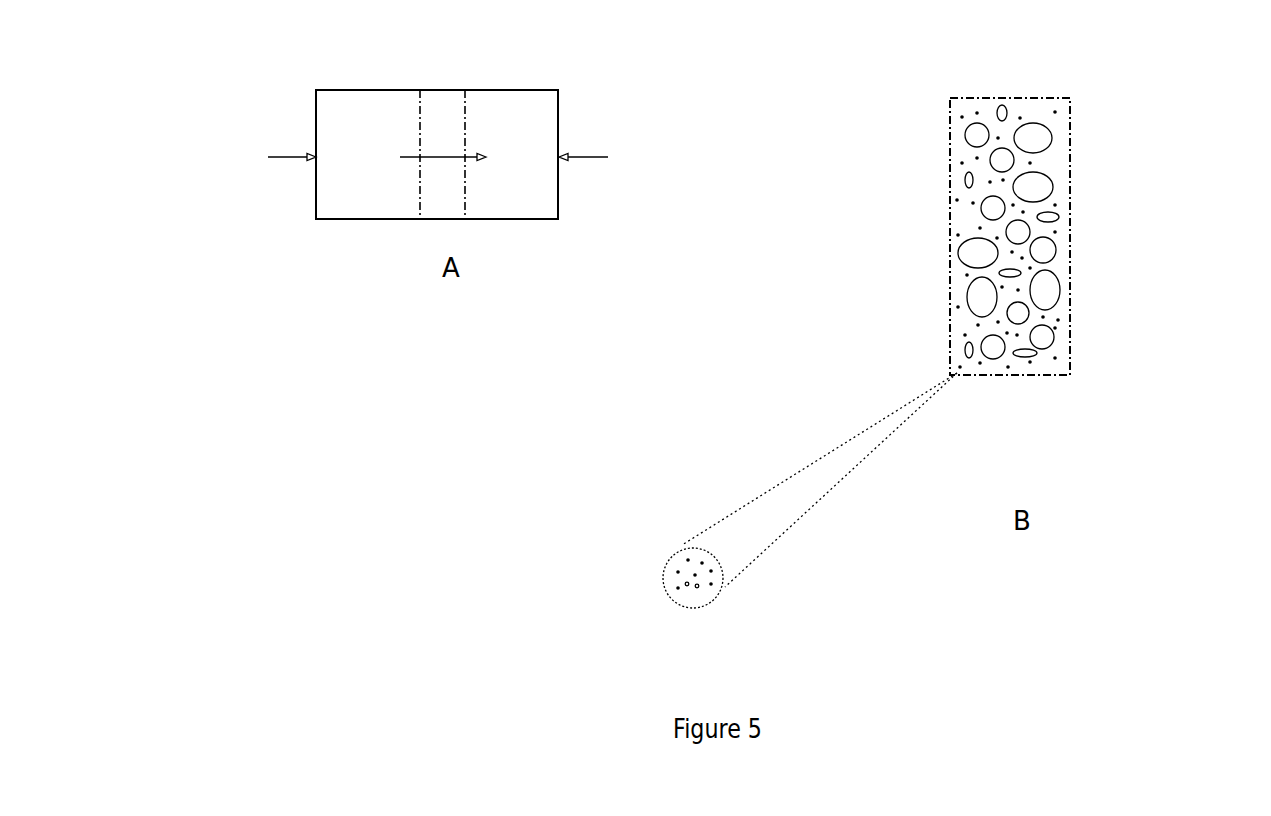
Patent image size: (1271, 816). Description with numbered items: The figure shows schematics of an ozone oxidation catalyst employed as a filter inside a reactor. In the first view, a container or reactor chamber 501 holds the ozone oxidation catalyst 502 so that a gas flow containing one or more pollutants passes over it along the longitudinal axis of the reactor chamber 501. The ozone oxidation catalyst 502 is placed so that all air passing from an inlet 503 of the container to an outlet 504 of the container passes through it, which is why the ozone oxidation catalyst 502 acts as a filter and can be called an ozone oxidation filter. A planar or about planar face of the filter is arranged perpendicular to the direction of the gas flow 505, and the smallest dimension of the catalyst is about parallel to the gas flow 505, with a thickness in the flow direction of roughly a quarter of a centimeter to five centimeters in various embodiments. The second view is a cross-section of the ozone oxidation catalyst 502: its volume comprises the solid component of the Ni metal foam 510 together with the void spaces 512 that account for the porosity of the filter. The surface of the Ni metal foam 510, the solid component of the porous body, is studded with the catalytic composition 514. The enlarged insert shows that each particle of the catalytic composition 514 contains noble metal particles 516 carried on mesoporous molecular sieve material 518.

In FIG. 5A, the reactor chamber 501 is at (568, 95).
In FIG. 5A, the ozone oxidation catalyst 502 is at (437, 121).
In FIG. 5A, the inlet 503 is at (270, 159).
In FIG. 5A, the outlet 504 is at (604, 159).
In FIG. 5A, the gas flow 505 is at (422, 159).
In FIG. 5B, the Ni metal foam 510 is at (1078, 153).
In FIG. 5B, the void spaces 512 is at (1049, 133).
In FIG. 5B, the catalytic composition 514 is at (1074, 214).
In FIG. 5B, the noble metal particles 516 is at (693, 599).
In FIG. 5B, the mesoporous molecular sieve material 518 is at (654, 586).